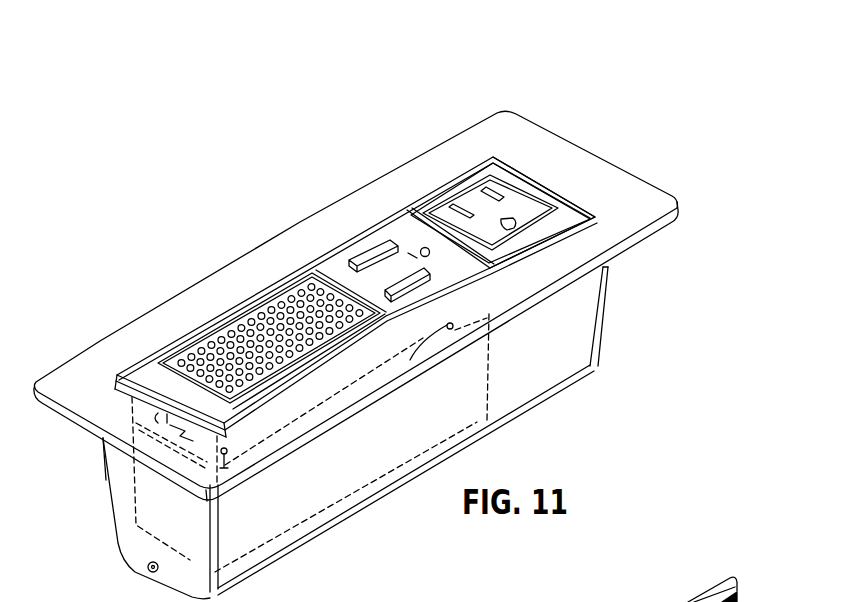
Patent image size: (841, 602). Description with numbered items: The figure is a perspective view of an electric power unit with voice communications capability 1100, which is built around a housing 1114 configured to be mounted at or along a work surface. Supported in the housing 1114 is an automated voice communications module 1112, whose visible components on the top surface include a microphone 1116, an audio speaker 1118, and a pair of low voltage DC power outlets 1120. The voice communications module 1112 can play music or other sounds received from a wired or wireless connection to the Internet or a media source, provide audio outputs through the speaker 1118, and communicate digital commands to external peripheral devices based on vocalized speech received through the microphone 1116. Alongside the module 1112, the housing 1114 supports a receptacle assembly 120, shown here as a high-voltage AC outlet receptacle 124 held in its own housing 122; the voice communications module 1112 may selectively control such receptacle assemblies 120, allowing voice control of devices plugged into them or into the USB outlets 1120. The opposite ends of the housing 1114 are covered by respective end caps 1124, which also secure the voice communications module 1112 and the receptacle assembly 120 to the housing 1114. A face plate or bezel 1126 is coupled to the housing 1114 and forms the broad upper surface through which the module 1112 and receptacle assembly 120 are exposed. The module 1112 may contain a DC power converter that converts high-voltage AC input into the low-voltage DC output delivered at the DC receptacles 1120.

The electric power unit with voice communications capability 1100 is at (254, 137).
The automated voice communications module 1112 is at (302, 247).
The housing 1114 is at (578, 352).
The microphone 1116 is at (433, 249).
The audio speaker 1118 is at (220, 349).
The low voltage DC power outlets 1120 is at (389, 282).
The end caps 1124 is at (611, 302).
The face plate or bezel 1126 is at (657, 214).
The receptacle assembly 120 is at (519, 123).
The housing 122 is at (567, 209).
The high-voltage AC outlet receptacle 124 is at (525, 212).